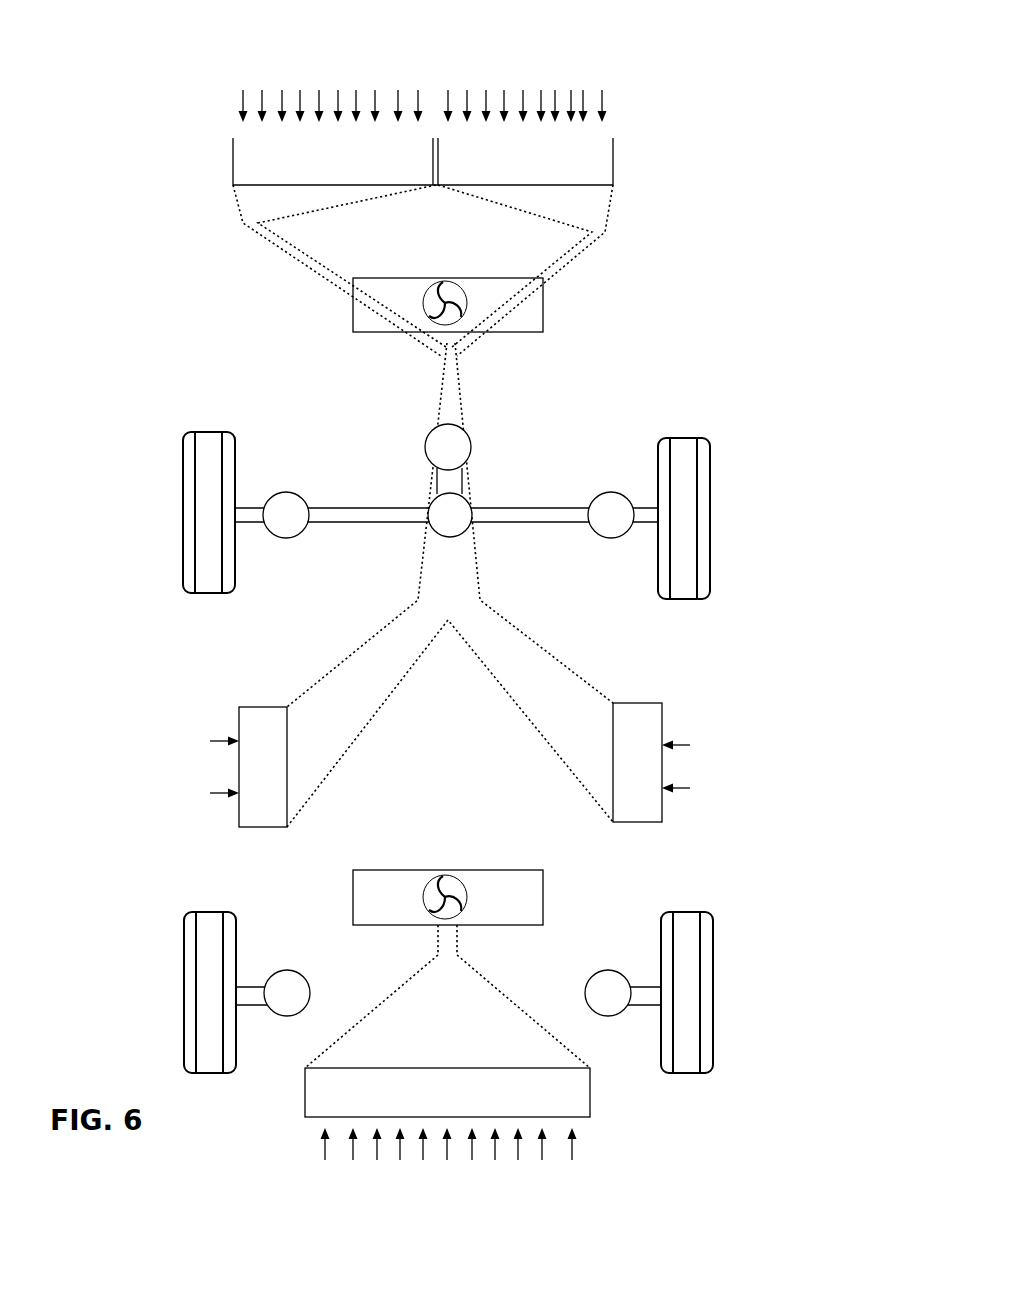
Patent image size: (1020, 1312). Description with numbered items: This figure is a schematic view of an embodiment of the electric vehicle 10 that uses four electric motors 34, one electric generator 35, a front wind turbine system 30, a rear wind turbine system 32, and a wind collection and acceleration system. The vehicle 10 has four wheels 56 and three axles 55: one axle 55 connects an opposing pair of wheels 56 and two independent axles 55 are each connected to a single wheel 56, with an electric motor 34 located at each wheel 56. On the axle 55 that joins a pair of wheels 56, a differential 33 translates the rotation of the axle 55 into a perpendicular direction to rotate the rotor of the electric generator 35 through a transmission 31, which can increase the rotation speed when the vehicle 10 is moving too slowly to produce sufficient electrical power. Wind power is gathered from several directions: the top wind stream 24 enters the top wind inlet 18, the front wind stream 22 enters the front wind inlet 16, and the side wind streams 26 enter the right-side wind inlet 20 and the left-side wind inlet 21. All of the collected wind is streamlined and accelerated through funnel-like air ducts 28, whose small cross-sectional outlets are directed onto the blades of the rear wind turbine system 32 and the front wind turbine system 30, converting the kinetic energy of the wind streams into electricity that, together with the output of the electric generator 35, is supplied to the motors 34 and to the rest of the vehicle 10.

The electric vehicle 10 is at (600, 618).
The front wind inlet 16 is at (590, 1092).
The top wind inlet 18 is at (233, 162).
The right-side wind inlet 20 is at (665, 763).
The left-side wind inlet 21 is at (239, 768).
The front wind stream 22 is at (322, 1172).
The top wind stream 24 is at (338, 95).
The side wind stream 26 is at (697, 745).
The air duct 28 is at (447, 385).
The front wind turbine system 30 is at (543, 898).
The transmission 31 is at (452, 482).
The rear wind turbine system 32 is at (543, 305).
The differential 33 is at (448, 513).
The electric motor 34 is at (285, 532).
The electric generator 35 is at (467, 442).
The axle 55 is at (347, 517).
The wheel 56 is at (212, 447).